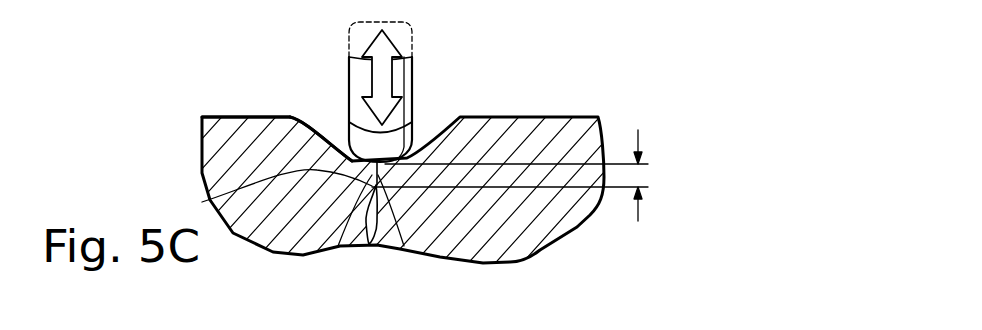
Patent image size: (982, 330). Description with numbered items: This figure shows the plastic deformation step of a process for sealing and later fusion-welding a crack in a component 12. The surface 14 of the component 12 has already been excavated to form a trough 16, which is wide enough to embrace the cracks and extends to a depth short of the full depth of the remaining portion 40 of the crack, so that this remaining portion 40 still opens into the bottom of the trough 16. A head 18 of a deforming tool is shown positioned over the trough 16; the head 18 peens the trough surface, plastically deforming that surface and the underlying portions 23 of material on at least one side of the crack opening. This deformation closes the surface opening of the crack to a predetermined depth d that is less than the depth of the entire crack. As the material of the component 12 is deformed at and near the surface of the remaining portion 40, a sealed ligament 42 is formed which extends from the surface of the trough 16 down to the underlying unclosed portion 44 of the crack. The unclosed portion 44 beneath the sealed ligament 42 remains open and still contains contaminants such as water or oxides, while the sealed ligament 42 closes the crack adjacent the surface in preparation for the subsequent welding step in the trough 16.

The component 12 is at (231, 155).
The surface 14 is at (234, 116).
The trough 16 is at (309, 128).
The head 18 is at (352, 80).
The underlying portions 23 is at (202, 202).
The remaining portion of crack 40 is at (398, 247).
The sealed ligament 42 is at (338, 246).
The underlying unclosed portion 44 is at (367, 245).
The predetermined depth d is at (636, 174).